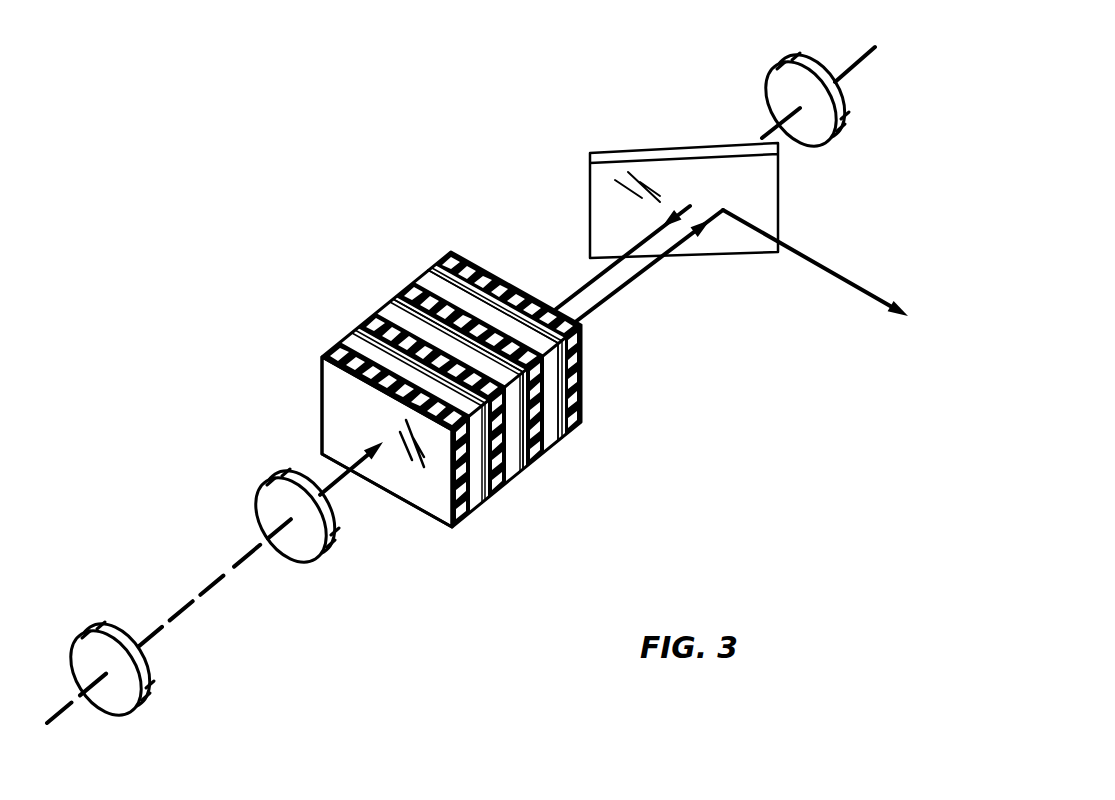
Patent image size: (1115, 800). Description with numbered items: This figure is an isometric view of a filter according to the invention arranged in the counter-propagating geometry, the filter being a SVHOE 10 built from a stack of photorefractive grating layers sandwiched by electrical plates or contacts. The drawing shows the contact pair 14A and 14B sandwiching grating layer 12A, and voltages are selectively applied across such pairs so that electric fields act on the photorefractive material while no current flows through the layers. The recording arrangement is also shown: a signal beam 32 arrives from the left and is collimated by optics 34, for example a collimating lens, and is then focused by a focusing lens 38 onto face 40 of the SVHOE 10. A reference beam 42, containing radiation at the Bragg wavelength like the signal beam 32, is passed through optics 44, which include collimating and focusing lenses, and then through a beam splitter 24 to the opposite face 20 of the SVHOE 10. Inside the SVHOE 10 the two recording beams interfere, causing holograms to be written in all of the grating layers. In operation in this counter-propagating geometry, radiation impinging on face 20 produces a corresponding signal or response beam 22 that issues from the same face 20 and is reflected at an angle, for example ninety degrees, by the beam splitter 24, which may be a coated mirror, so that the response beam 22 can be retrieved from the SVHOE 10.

The SVHOE 10 is at (655, 515).
The grating layer 12A is at (448, 254).
The electrical contact 14A is at (579, 427).
The electrical contact 14B is at (571, 437).
The face 20 is at (582, 352).
The response beam 22 is at (822, 262).
The beam splitter 24 is at (594, 152).
The signal beam 32 is at (57, 725).
The optics 34 is at (88, 632).
The focusing lens 38 is at (275, 478).
The face 40 is at (418, 496).
The reference beam 42 is at (762, 136).
The optics 44 is at (783, 60).